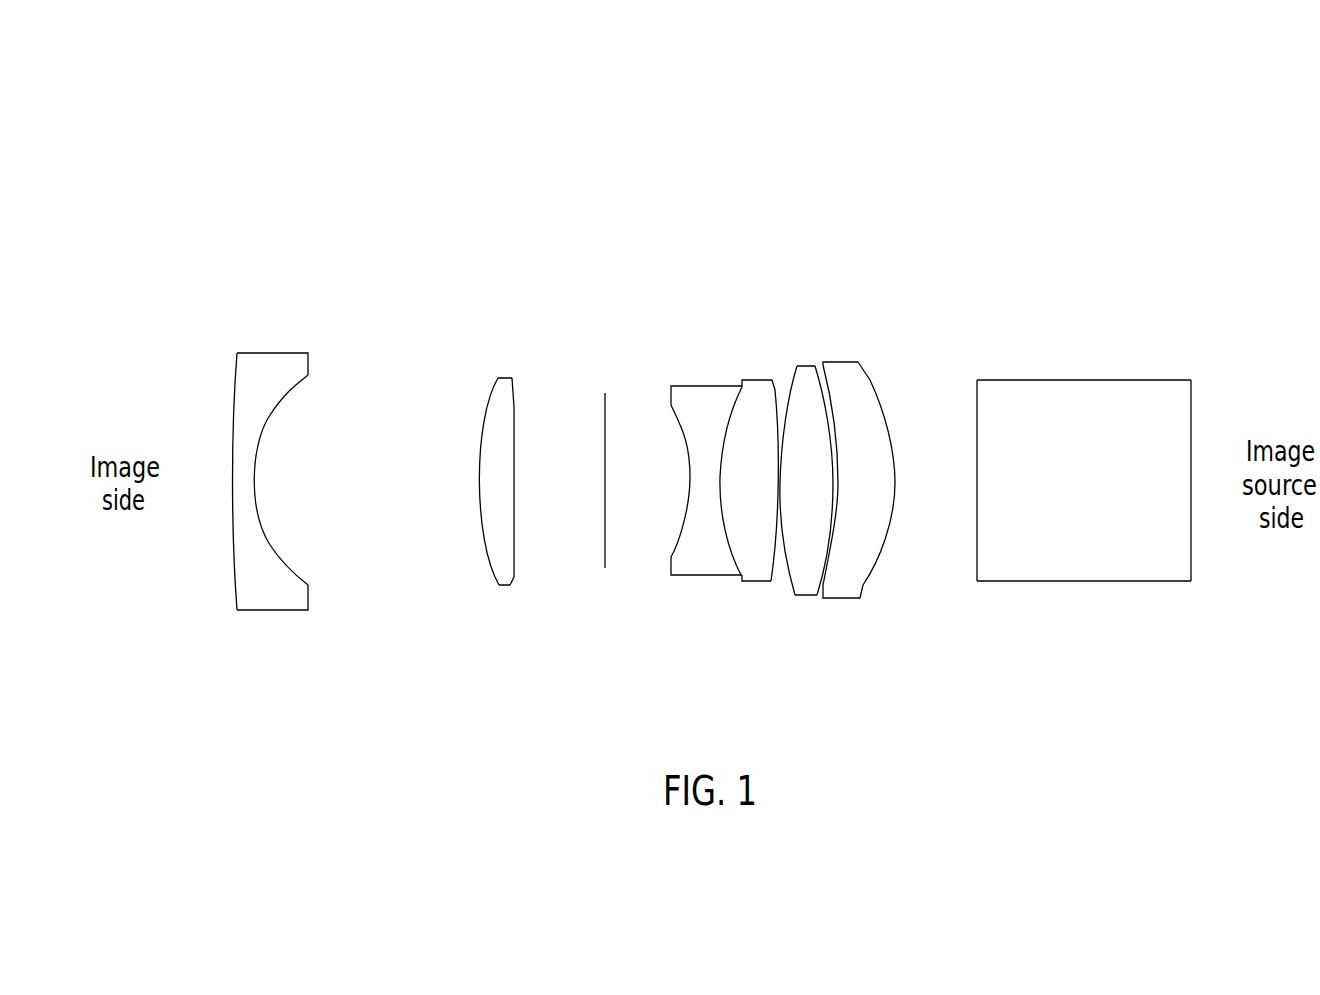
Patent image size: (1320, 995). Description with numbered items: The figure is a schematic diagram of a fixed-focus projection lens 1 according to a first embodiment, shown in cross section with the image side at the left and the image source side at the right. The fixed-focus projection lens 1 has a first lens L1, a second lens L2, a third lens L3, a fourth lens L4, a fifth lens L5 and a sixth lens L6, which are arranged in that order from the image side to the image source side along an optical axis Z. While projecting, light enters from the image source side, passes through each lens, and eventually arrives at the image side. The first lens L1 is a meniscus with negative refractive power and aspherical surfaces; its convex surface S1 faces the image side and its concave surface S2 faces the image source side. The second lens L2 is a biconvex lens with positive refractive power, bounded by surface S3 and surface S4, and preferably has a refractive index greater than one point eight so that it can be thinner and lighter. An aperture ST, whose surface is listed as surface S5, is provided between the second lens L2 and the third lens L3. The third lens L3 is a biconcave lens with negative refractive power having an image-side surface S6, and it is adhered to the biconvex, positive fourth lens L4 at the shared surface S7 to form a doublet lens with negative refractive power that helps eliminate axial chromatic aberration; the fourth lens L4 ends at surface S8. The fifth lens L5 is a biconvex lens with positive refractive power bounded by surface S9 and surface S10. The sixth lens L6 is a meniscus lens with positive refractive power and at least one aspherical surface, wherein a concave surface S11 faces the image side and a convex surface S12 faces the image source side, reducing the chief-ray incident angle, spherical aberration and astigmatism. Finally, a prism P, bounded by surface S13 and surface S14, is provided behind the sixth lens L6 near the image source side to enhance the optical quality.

The fixed-focus projection lens 1 is at (242, 213).
The first lens L1 is at (280, 493).
The second lens L2 is at (479, 472).
The third lens L3 is at (683, 483).
The fourth lens L4 is at (746, 447).
The fifth lens L5 is at (792, 475).
The sixth lens L6 is at (853, 443).
The aperture ST is at (597, 457).
The prism P is at (1092, 484).
The optical axis Z is at (1217, 486).
The convex surface S1 is at (237, 372).
The concave surface S2 is at (292, 397).
The surface S3 is at (488, 412).
The surface S4 is at (514, 407).
The surface S5 is at (604, 420).
The surface S6 is at (676, 422).
The surface S7 is at (738, 395).
The surface S8 is at (772, 382).
The surface S9 is at (792, 386).
The surface S10 is at (826, 390).
The concave surface S11 is at (831, 395).
The convex surface S12 is at (871, 374).
The surface S13 is at (976, 410).
The surface S14 is at (1192, 395).